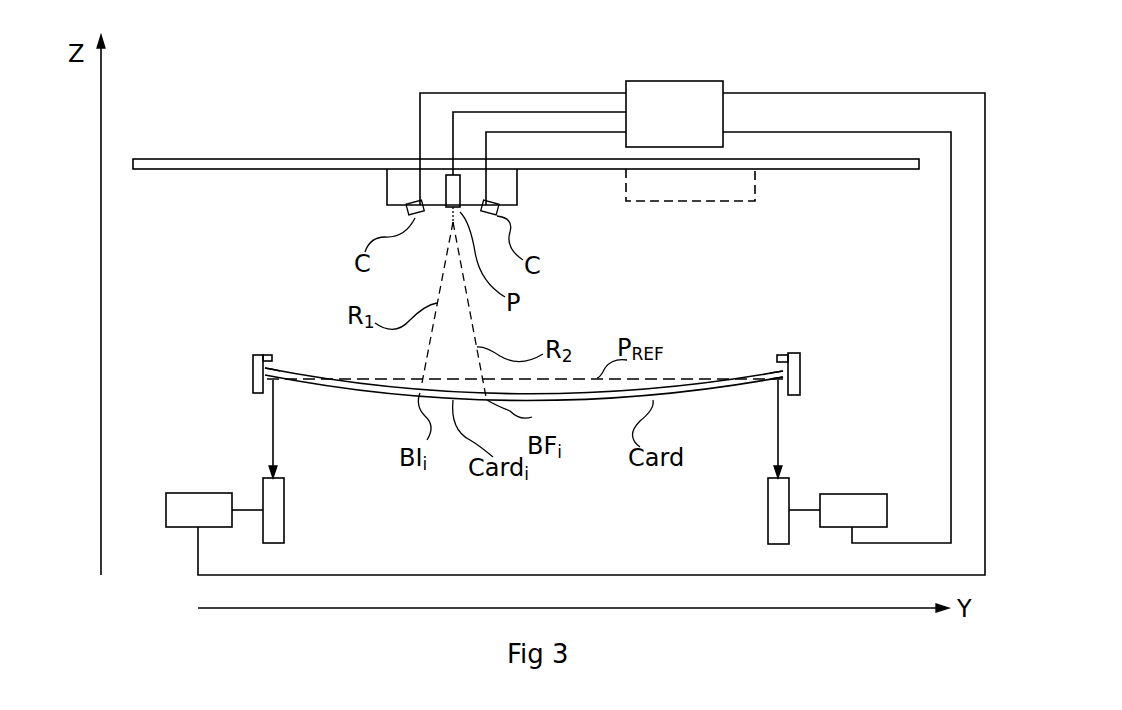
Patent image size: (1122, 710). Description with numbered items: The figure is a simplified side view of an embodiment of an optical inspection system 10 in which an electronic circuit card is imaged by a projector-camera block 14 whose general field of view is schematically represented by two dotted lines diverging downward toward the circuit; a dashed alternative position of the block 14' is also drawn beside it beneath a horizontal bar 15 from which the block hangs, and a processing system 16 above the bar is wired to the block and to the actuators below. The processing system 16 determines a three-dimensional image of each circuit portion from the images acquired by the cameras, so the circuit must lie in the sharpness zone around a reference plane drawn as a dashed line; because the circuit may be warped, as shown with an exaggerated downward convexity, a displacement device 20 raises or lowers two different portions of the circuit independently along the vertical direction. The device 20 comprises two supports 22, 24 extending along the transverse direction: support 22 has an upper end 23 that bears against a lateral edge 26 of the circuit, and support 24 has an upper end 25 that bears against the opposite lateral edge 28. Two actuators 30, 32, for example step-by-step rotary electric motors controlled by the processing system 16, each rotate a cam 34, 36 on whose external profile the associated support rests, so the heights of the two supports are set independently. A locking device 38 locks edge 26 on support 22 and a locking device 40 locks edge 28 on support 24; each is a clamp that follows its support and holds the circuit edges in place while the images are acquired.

The optical inspection system 10 is at (886, 36).
The projector-camera block 14 is at (414, 195).
The alternative sensor position 14' is at (704, 210).
The support bar 15 is at (781, 160).
The processing system 16 is at (684, 81).
The displacement device 20 is at (874, 486).
The first support 22 is at (273, 440).
The upper end of first support 23 is at (275, 382).
The second support 24 is at (778, 438).
The upper end of second support 25 is at (777, 378).
The lateral edge of circuit Card 26 is at (272, 367).
The opposite lateral edge of circuit Card 28 is at (777, 370).
The first actuator 30 is at (198, 493).
The second actuator 32 is at (828, 494).
The first cam 34 is at (284, 520).
The second cam 36 is at (768, 535).
The first locking device 38 is at (260, 355).
The second locking device 40 is at (784, 357).